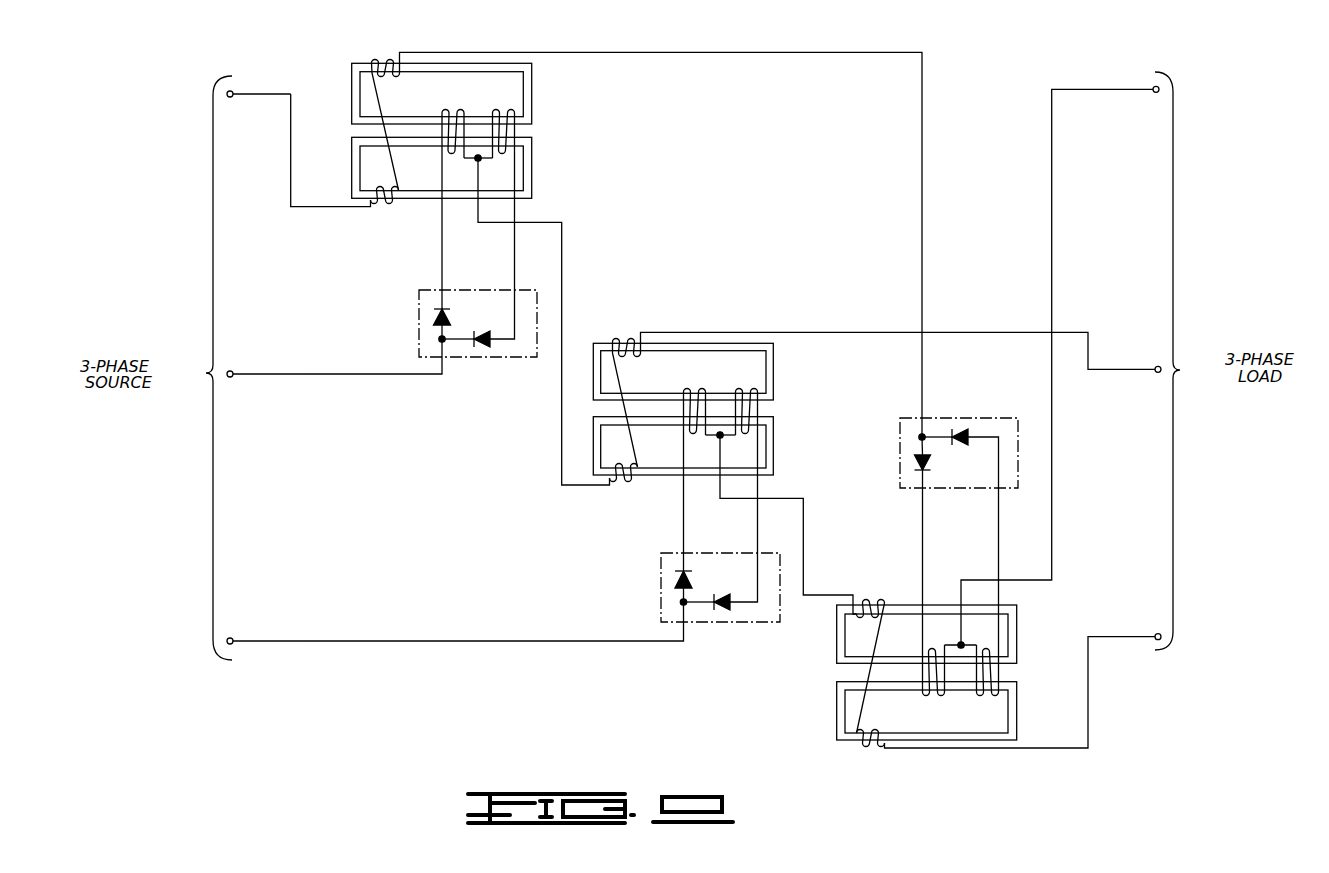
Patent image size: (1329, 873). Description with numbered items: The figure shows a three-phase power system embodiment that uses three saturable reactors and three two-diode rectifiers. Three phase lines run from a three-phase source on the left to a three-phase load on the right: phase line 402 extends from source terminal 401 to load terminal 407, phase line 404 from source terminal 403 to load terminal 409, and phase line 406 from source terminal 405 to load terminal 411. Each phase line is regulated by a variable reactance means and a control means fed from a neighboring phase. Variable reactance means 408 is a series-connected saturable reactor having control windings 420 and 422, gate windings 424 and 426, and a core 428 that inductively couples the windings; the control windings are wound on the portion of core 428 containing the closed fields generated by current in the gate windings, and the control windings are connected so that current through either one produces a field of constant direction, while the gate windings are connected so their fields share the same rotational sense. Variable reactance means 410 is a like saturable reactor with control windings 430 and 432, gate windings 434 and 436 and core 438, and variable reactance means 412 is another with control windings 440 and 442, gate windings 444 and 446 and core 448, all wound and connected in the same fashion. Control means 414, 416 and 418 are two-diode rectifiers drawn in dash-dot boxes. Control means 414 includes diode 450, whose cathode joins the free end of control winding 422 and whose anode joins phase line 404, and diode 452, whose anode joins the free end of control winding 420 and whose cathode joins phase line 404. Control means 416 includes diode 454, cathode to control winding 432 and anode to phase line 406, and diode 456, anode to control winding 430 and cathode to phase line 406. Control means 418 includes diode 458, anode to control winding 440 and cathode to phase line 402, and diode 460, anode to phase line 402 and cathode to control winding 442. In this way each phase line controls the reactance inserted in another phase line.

The source terminal 401 is at (255, 106).
The phase line 402 is at (302, 209).
The source terminal 403 is at (261, 389).
The phase line 404 is at (331, 376).
The source terminal 405 is at (261, 629).
The phase line 406 is at (457, 638).
The load terminal 407 is at (1133, 102).
The variable reactance means 408 is at (468, 131).
The load terminal 409 is at (1132, 384).
The variable reactance means 410 is at (688, 414).
The load terminal 411 is at (1133, 627).
The variable reactance means 412 is at (878, 670).
The control means 414 is at (478, 340).
The control means 416 is at (690, 576).
The control means 418 is at (959, 430).
The control winding 420 is at (500, 90).
The control winding 422 is at (444, 111).
The gate winding 424 is at (378, 62).
The gate winding 426 is at (381, 201).
The core 428 is at (348, 136).
The control winding 430 is at (745, 390).
The control winding 432 is at (688, 390).
The gate winding 434 is at (626, 340).
The gate winding 436 is at (627, 485).
The core 438 is at (587, 402).
The control winding 440 is at (983, 694).
The control winding 442 is at (930, 694).
The gate winding 444 is at (875, 600).
The gate winding 446 is at (860, 746).
The core 448 is at (831, 658).
The diode 450 is at (452, 321).
The diode 452 is at (502, 322).
The diode 454 is at (692, 578).
The diode 456 is at (738, 583).
The diode 458 is at (970, 443).
The diode 460 is at (927, 463).